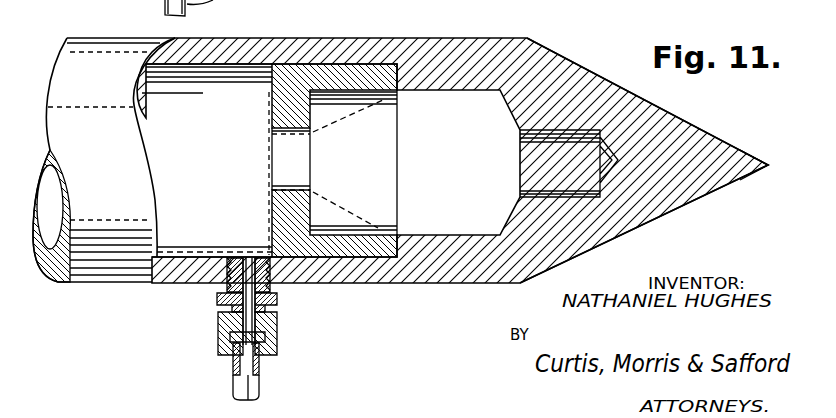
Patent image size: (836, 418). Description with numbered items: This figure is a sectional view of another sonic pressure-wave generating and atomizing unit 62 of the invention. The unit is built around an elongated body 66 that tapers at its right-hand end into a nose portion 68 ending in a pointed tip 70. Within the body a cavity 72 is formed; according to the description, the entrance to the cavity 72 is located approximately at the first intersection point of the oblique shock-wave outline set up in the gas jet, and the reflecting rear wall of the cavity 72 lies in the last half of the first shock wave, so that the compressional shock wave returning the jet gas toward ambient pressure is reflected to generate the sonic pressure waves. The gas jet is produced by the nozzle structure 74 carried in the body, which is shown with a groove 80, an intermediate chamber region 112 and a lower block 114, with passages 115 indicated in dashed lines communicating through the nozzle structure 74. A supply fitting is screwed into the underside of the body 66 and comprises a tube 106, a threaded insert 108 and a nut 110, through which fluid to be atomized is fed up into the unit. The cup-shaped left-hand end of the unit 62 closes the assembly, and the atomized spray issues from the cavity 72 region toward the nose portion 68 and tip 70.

The atomizer unit 62 is at (132, 287).
The body 66 is at (350, 50).
The tapered nose portion 68 is at (481, 50).
The tip 70 is at (720, 151).
The cavity 72 is at (574, 172).
The nozzle structure 74 is at (272, 91).
The groove 80 is at (297, 144).
The tube 106 is at (261, 392).
The threaded insert 108 is at (278, 296).
The nut 110 is at (264, 334).
The piston chamber 112 is at (382, 191).
The lower piston block 114 is at (270, 251).
The passages 115 is at (267, 118).